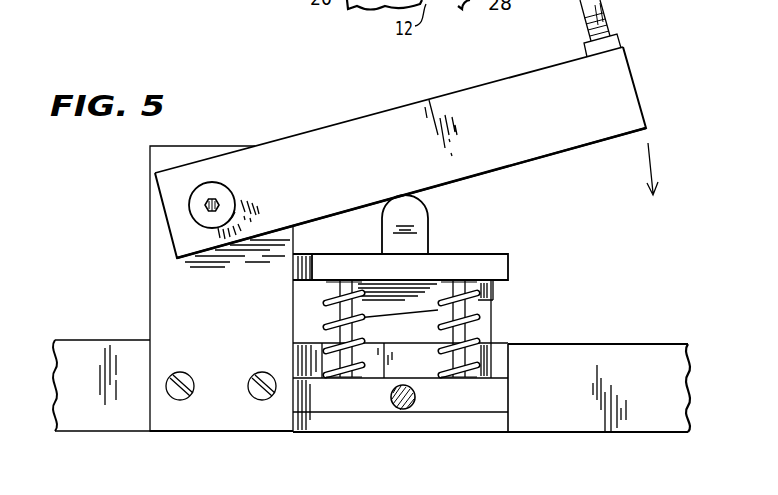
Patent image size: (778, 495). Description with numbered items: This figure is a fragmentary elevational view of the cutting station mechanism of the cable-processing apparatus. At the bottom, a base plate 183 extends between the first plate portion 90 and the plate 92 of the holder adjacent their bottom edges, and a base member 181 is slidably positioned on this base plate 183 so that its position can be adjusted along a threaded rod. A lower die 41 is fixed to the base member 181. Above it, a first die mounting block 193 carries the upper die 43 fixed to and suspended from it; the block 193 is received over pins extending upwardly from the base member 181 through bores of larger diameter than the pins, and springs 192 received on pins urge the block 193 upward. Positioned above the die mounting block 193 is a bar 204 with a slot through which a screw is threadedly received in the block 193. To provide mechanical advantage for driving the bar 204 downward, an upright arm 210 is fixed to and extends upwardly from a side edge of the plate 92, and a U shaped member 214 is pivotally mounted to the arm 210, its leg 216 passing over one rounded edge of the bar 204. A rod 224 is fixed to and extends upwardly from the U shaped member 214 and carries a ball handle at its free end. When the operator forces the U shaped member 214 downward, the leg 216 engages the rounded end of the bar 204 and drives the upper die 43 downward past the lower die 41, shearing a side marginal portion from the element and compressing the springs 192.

The upright arm 210 is at (163, 297).
The plate 92 is at (122, 418).
The first plate portion 90 is at (646, 418).
The U shaped member 214 is at (630, 100).
The leg 216 is at (383, 125).
The rod 224 is at (604, 12).
The bar 204 is at (427, 216).
The first die mounting block 193 is at (495, 265).
The upper die 43 is at (493, 304).
The spring 192 is at (482, 335).
The lower die 41 is at (383, 368).
The base member 181 is at (432, 398).
The base plate 183 is at (482, 422).